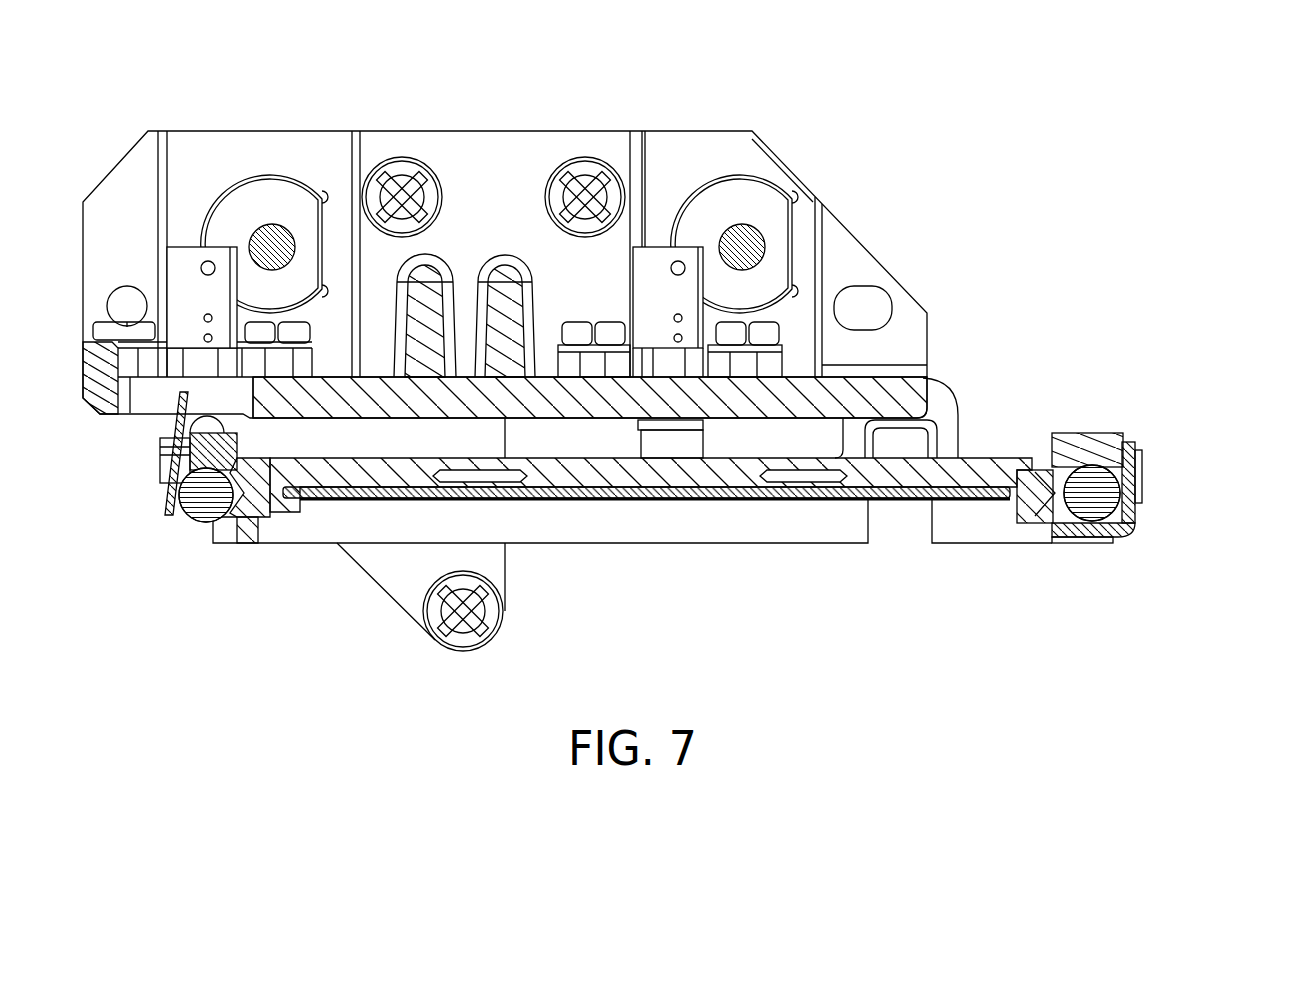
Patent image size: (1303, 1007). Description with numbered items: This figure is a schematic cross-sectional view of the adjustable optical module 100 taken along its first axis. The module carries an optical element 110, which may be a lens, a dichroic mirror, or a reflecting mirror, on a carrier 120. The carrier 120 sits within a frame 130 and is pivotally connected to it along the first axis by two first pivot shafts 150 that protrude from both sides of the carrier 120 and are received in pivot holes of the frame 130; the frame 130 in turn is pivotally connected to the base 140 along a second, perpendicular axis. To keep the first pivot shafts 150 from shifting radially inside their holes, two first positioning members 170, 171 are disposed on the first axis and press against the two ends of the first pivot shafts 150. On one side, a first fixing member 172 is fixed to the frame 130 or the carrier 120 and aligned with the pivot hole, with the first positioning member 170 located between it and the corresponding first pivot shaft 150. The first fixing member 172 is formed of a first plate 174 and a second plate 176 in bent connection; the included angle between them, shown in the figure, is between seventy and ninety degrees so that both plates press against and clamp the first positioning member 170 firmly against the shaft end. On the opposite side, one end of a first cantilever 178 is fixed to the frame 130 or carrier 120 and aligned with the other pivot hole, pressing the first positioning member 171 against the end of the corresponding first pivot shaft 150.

The adjustable optical module 100 is at (1011, 187).
The optical element 110 is at (901, 498).
The carrier 120 is at (956, 478).
The frame 130 is at (1097, 451).
The base 140 is at (903, 395).
The first pivot shafts 150 is at (240, 513).
The first positioning member 170 is at (1050, 523).
The first positioning member 171 is at (201, 505).
The first fixing member 172 is at (1154, 506).
The first plate 174 is at (1128, 504).
The second plate 176 is at (1102, 536).
The first cantilever 178 is at (168, 499).